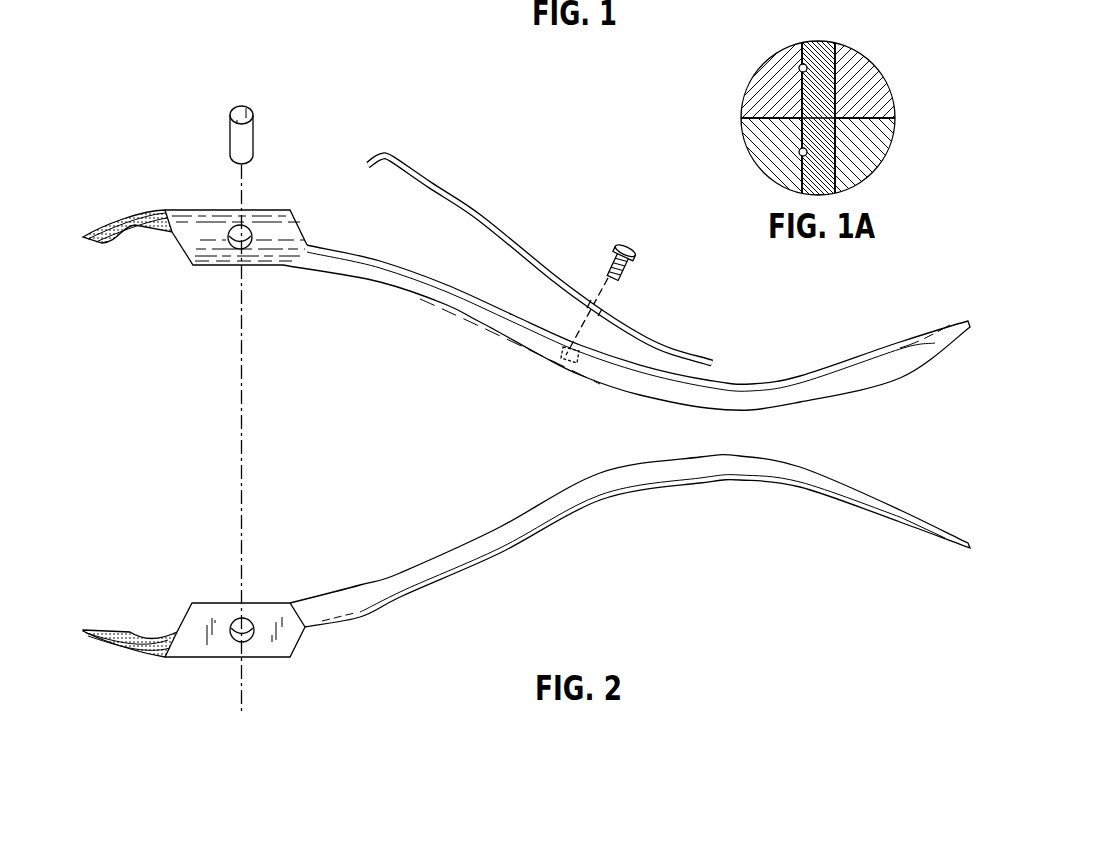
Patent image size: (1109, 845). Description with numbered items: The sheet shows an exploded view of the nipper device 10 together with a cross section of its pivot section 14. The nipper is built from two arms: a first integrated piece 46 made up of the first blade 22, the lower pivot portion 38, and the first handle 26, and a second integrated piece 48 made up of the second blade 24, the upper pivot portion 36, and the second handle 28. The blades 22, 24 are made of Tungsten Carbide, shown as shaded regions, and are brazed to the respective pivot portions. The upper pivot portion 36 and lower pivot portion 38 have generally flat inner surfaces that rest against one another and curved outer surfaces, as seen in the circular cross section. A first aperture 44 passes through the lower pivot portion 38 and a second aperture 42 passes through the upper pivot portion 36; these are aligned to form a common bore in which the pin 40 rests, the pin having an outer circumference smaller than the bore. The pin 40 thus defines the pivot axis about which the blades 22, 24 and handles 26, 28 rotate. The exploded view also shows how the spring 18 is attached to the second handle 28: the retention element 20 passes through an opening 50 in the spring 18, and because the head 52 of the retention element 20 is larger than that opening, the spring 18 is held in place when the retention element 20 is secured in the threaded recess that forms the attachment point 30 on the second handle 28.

In FIG. 2, the nipper device 10 is at (525, 576).
In FIG. 1A, the pivot section 14 is at (828, 100).
In FIG. 2, the spring 18 is at (540, 259).
In FIG. 2, the retention element 20 is at (654, 256).
In FIG. 2, the first blade 22 is at (100, 622).
In FIG. 2, the second blade 24 is at (103, 244).
In FIG. 2, the first handle 26 is at (927, 512).
In FIG. 2, the second handle 28 is at (930, 353).
In FIG. 2, the attachment point 30 is at (560, 358).
In FIG. 1A, the upper pivot portion 36 is at (865, 70).
In FIG. 2, the upper pivot portion 36 is at (260, 210).
In FIG. 1A, the lower pivot portion 38 is at (877, 160).
In FIG. 2, the lower pivot portion 38 is at (280, 658).
In FIG. 1A, the pin 40 is at (818, 42).
In FIG. 2, the pin 40 is at (254, 122).
In FIG. 1A, the second aperture 42 is at (800, 64).
In FIG. 2, the second aperture 42 is at (237, 242).
In FIG. 1A, the first aperture 44 is at (800, 144).
In FIG. 2, the first aperture 44 is at (238, 634).
In FIG. 2, the first integrated piece 46 is at (636, 541).
In FIG. 2, the second integrated piece 48 is at (635, 327).
In FIG. 2, the opening 50 is at (595, 298).
In FIG. 2, the head 52 is at (646, 238).